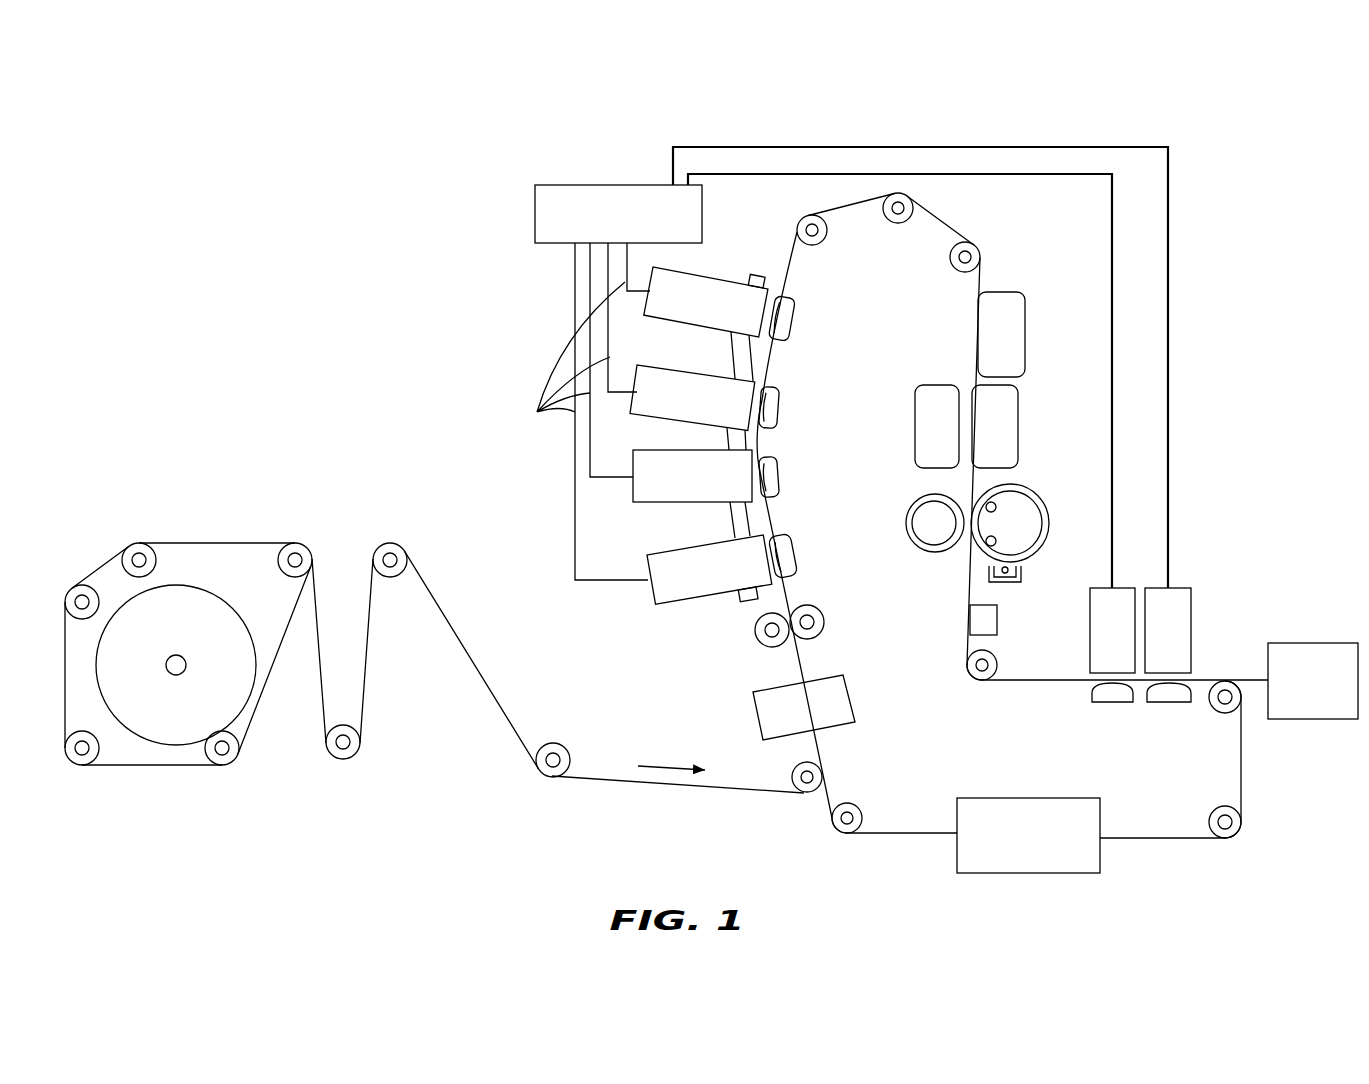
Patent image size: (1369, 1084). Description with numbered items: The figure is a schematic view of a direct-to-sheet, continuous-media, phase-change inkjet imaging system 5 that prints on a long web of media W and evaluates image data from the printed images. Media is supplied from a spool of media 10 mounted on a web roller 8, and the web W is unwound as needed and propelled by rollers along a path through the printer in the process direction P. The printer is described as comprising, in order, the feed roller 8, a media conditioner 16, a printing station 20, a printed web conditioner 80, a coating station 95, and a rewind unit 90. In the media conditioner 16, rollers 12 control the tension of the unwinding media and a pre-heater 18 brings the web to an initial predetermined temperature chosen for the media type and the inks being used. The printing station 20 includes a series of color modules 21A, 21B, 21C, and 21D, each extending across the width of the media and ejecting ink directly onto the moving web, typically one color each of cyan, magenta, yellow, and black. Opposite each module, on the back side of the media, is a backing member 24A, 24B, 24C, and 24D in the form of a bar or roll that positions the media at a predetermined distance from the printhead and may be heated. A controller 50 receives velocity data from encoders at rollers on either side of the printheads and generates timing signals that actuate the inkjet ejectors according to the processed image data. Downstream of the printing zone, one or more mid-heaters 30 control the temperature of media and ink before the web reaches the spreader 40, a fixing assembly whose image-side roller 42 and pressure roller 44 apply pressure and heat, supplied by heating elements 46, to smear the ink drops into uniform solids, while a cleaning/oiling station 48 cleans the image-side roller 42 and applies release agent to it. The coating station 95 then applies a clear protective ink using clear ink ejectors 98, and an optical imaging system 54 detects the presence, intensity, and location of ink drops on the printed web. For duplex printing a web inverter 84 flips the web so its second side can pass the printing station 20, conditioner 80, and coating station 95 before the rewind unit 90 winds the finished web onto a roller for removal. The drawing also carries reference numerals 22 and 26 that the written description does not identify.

The inkjet imaging system 5 is at (411, 260).
The web roller 8 is at (176, 676).
The spool of media 10 is at (249, 628).
The rollers 12 is at (394, 577).
The media conditioner 16 is at (555, 682).
The pre-heater 18 is at (853, 697).
The printing station 20 is at (560, 502).
The color module 21A is at (707, 602).
The color module 21B is at (685, 503).
The color module 21C is at (677, 425).
The color module 21D is at (692, 328).
The control lines 22 is at (569, 361).
The backing member 24A is at (795, 557).
The backing member 24B is at (778, 408).
The backing member 24C is at (778, 478).
The backing member 24D is at (790, 320).
The turn rollers 26 is at (827, 238).
The mid-heater 30 is at (1040, 329).
The spreader 40 is at (1042, 460).
The image-side roller 42 is at (1048, 538).
The pressure roller 44 is at (925, 533).
The heating elements 46 is at (994, 538).
The cleaning/oiling station 48 is at (1005, 585).
The controller 50 is at (620, 185).
The optical imaging system 54 is at (975, 620).
The printed web conditioner 80 is at (945, 649).
The web inverter 84 is at (1028, 799).
The rewind unit 90 is at (1313, 643).
The coating station 95 is at (1182, 564).
The clear ink ejectors 98 is at (1090, 630).
The web of media W is at (210, 543).
The process direction P is at (677, 766).